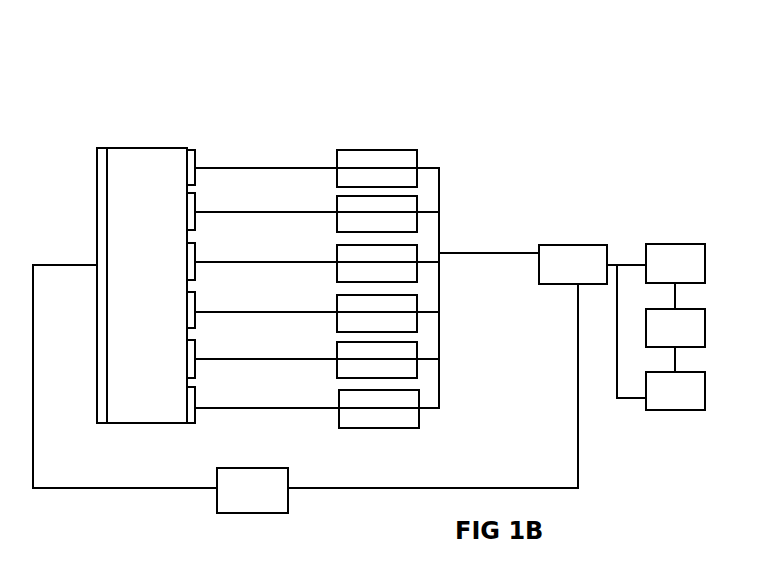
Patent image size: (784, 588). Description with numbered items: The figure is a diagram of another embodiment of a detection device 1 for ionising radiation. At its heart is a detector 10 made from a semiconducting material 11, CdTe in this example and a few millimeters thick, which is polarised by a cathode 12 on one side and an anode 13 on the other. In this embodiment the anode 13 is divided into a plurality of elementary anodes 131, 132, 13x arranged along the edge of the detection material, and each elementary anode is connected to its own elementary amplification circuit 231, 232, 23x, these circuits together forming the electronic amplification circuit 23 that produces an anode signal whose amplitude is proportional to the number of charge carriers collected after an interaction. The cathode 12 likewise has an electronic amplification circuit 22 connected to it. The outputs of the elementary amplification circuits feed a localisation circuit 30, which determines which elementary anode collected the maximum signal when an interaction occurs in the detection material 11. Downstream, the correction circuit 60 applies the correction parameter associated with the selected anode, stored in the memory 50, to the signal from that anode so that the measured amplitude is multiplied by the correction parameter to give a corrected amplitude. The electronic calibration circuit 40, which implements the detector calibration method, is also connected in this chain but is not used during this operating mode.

The detection device 1 is at (82, 202).
The detector 10 is at (83, 62).
The semiconducting material 11 is at (152, 183).
The cathode 12 is at (103, 185).
The anode 13 is at (265, 100).
The elementary anode 131 is at (190, 165).
The elementary anode 132 is at (190, 212).
The elementary anode 13x is at (190, 305).
The electronic amplification circuit 23 is at (335, 107).
The elementary amplification circuit 231 is at (392, 168).
The elementary amplification circuit 232 is at (402, 213).
The elementary amplification circuit 23x is at (402, 317).
The localisation circuit 30 is at (573, 242).
The electronic calibration circuit 40 is at (675, 242).
The memory 50 is at (694, 328).
The correction circuit 60 is at (696, 392).
The electronic amplification circuit 22 is at (282, 493).